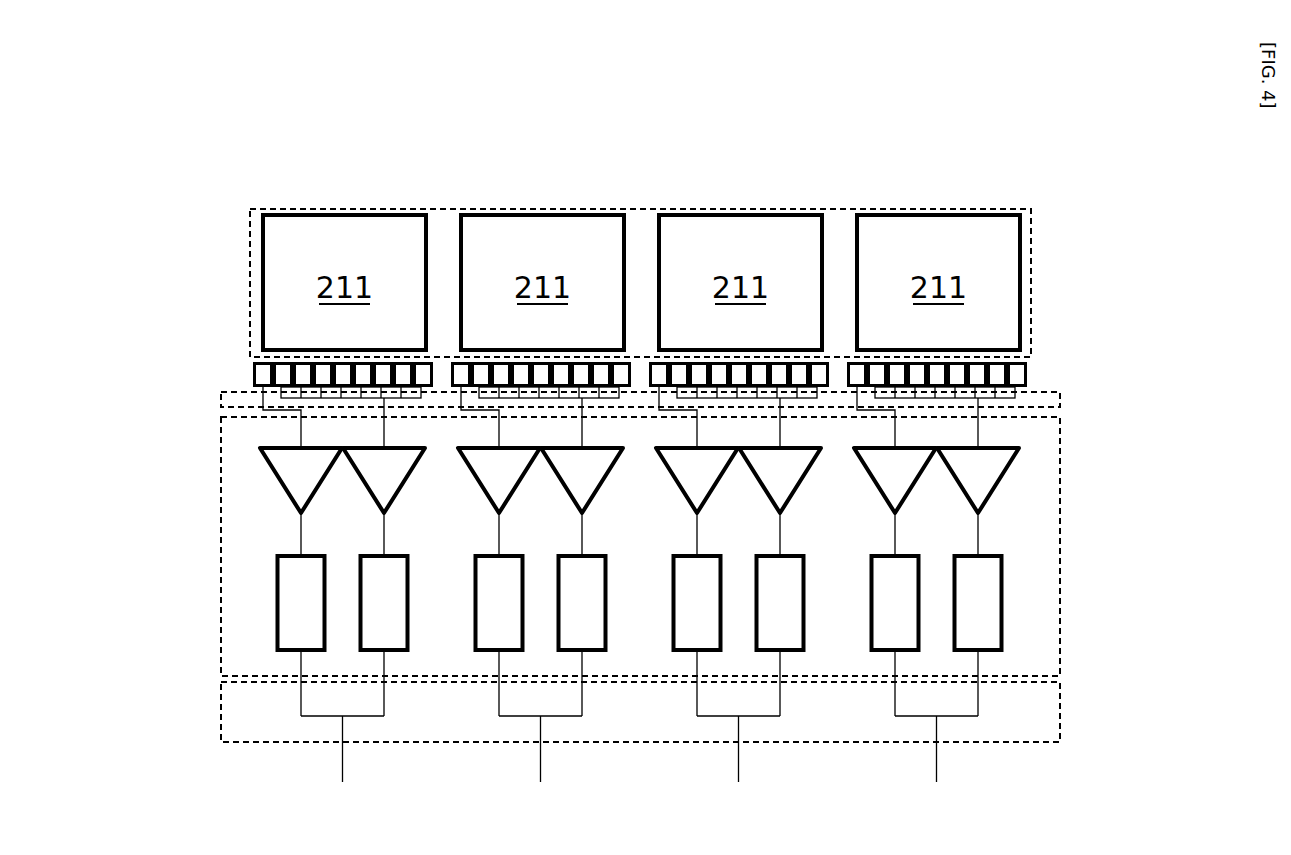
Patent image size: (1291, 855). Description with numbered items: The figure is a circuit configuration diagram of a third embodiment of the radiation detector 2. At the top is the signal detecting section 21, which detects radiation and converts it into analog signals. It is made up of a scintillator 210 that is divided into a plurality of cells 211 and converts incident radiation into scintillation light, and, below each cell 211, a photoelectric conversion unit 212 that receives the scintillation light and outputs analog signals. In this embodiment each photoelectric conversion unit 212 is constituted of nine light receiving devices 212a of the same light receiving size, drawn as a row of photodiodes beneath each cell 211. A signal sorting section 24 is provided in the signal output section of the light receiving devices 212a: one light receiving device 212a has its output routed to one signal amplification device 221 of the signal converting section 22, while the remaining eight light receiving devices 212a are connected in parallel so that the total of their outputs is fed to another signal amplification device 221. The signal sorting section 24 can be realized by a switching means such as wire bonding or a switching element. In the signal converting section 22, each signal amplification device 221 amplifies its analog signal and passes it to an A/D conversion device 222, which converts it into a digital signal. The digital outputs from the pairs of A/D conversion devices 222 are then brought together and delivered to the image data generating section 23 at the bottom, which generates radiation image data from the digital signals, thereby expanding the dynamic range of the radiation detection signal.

The radiation detector 2 is at (1090, 214).
The signal detecting section 21 is at (134, 233).
The scintillator 210 is at (246, 270).
The cell 211 is at (641, 282).
The photoelectric conversion unit 212 is at (242, 372).
The light receiving device 212a is at (301, 388).
The signal sorting section 24 is at (221, 398).
The signal converting section 22 is at (221, 512).
The signal amplification device 221 is at (868, 481).
The A/D conversion device 222 is at (870, 593).
The image data generating section 23 is at (220, 720).